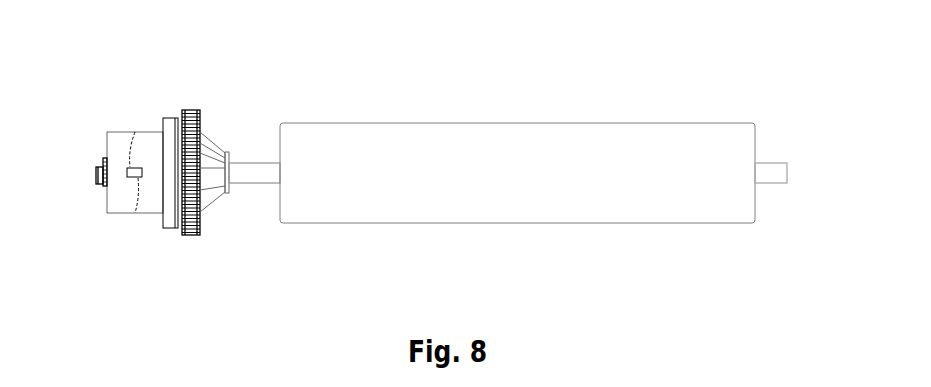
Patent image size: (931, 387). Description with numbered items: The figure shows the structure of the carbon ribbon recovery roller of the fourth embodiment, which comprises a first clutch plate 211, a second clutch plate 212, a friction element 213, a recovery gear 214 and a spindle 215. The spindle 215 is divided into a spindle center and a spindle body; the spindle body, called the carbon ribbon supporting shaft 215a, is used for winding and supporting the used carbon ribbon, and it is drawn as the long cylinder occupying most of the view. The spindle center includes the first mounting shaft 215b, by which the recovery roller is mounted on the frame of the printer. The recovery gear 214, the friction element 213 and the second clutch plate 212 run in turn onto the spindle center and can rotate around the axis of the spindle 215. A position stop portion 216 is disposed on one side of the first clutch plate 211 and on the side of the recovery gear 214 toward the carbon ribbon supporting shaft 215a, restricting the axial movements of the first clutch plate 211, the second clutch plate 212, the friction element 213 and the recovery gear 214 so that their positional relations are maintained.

The first clutch plate 211 is at (115, 150).
The second clutch plate 212 is at (152, 143).
The friction element 213 is at (165, 215).
The recovery gear 214 is at (197, 212).
The spindle 215 is at (501, 112).
The carbon ribbon supporting shaft 215a is at (775, 170).
The first mounting shaft 215b is at (263, 170).
The position stop portion 216 is at (106, 160).